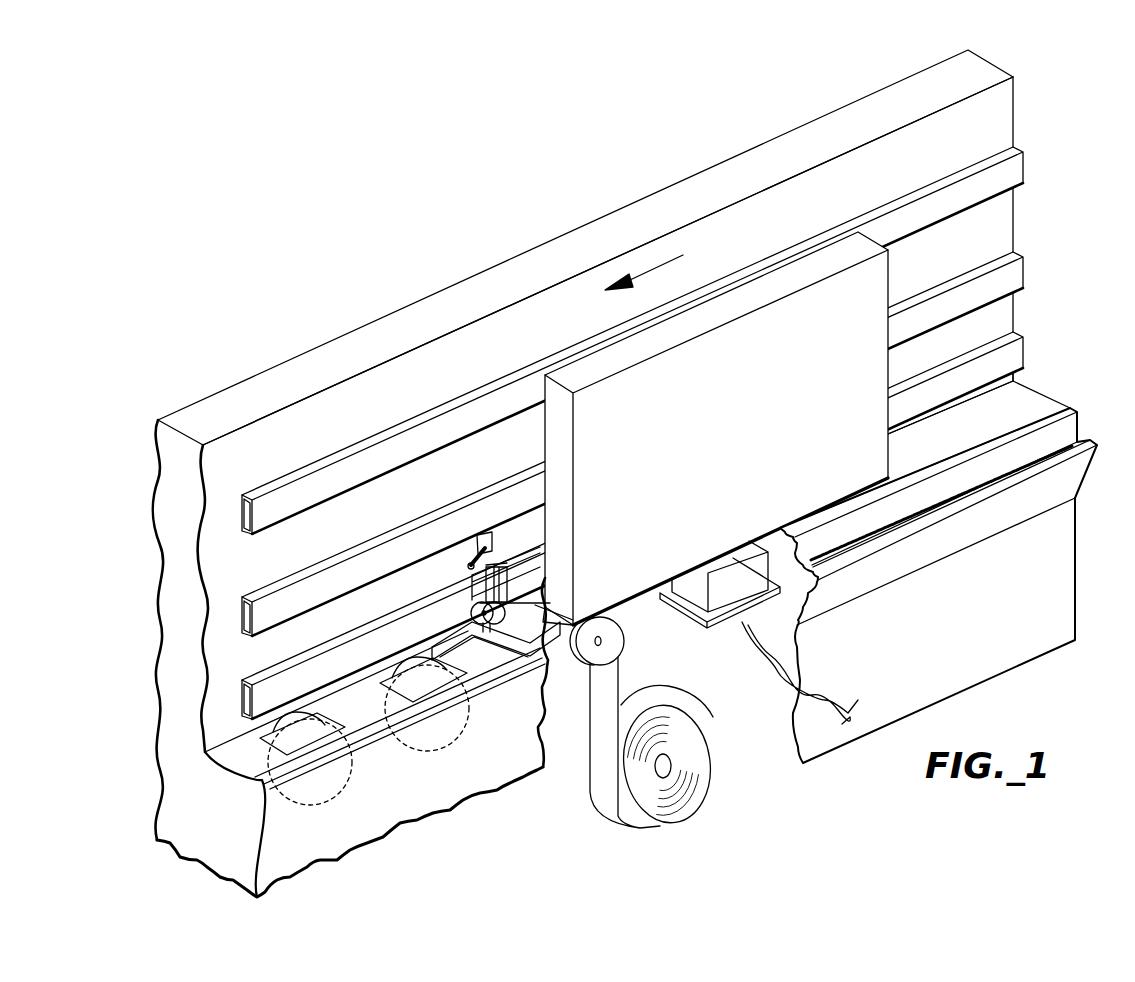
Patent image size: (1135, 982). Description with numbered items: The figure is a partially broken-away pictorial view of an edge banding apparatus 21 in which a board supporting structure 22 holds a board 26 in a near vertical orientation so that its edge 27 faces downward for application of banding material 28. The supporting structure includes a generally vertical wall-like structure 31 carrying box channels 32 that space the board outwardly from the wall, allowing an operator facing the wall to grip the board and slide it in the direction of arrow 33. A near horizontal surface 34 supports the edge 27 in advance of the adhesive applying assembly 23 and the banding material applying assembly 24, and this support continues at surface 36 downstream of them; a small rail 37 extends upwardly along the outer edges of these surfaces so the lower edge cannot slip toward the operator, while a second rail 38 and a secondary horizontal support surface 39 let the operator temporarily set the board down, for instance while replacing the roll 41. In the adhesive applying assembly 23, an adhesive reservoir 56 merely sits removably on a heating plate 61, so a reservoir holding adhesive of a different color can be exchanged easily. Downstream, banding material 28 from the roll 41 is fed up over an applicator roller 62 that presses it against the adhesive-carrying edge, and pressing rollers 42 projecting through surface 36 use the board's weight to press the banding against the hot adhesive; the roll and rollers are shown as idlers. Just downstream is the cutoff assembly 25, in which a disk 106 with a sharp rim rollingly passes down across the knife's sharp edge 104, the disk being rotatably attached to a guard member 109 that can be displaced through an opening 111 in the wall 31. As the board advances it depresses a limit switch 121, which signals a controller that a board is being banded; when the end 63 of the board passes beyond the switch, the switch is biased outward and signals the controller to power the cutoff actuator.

The edge banding apparatus 21 is at (313, 272).
The board supporting structure 22 is at (1030, 265).
The adhesive applying assembly 23 is at (765, 614).
The banding material applying assembly 24 is at (570, 683).
The banding material cutoff assembly 25 is at (508, 548).
The board 26 is at (745, 449).
The edge 27 is at (630, 603).
The banding material 28 is at (545, 680).
The wall-like structure 31 is at (993, 127).
The box channels 32 is at (277, 510).
The arrow 33 is at (655, 267).
The near horizontal surface 34 is at (1017, 408).
The horizontal support surface 36 is at (350, 713).
The rail 37 is at (1043, 410).
The second rail 38 is at (947, 513).
The horizontal support surface 39 is at (985, 490).
The roll 41 is at (645, 816).
The pressing rollers 42 is at (295, 738).
The adhesive reservoir 56 is at (723, 594).
The heating plate 61 is at (738, 623).
The applicator roller 62 is at (612, 652).
The end 63 is at (890, 370).
The sharp edge 104 is at (505, 647).
The disk 106 is at (470, 608).
The guard member 109 is at (463, 558).
The opening 111 is at (507, 584).
The limit switch 121 is at (473, 572).